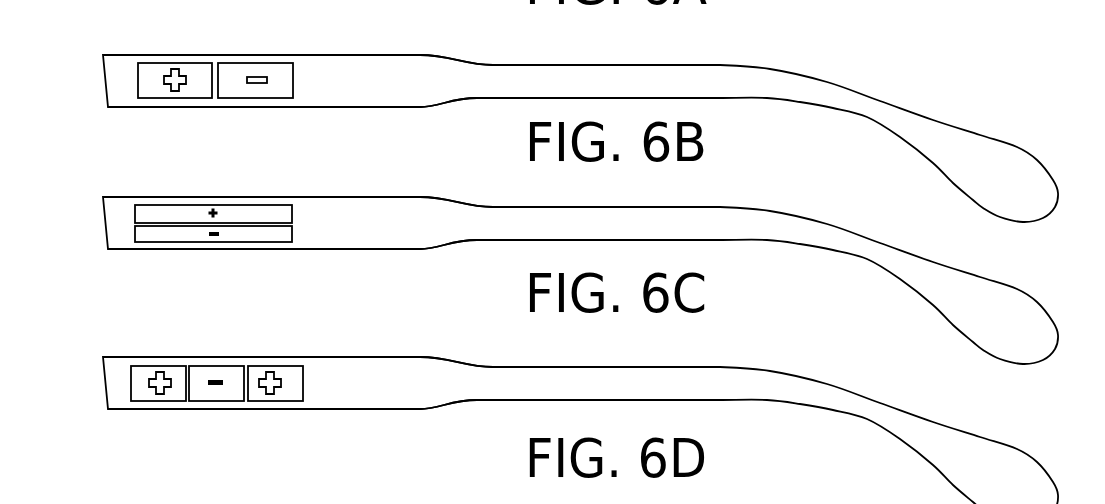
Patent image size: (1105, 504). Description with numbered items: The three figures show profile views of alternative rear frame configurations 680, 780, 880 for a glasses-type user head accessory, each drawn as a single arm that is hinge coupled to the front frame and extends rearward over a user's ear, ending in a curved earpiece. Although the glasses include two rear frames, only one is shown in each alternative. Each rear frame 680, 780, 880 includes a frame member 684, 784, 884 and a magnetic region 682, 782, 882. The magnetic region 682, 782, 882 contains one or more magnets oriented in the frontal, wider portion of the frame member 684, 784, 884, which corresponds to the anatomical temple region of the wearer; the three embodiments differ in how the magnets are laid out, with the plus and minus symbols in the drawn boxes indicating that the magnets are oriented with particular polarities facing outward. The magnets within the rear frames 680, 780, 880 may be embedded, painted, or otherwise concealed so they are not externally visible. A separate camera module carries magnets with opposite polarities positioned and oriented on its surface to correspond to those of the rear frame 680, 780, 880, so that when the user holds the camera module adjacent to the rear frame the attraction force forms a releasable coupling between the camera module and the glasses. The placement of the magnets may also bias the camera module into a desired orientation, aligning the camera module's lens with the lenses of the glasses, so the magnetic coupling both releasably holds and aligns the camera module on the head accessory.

In FIG. 6B, the rear frame 680 is at (830, 80).
In FIG. 6B, the magnetic region 682 is at (280, 74).
In FIG. 6B, the frame member 684 is at (472, 77).
In FIG. 6C, the rear frame 780 is at (752, 216).
In FIG. 6C, the magnetic region 782 is at (257, 213).
In FIG. 6C, the frame member 784 is at (392, 215).
In FIG. 6D, the rear frame 880 is at (754, 381).
In FIG. 6D, the magnetic region 882 is at (277, 372).
In FIG. 6D, the frame member 884 is at (418, 371).